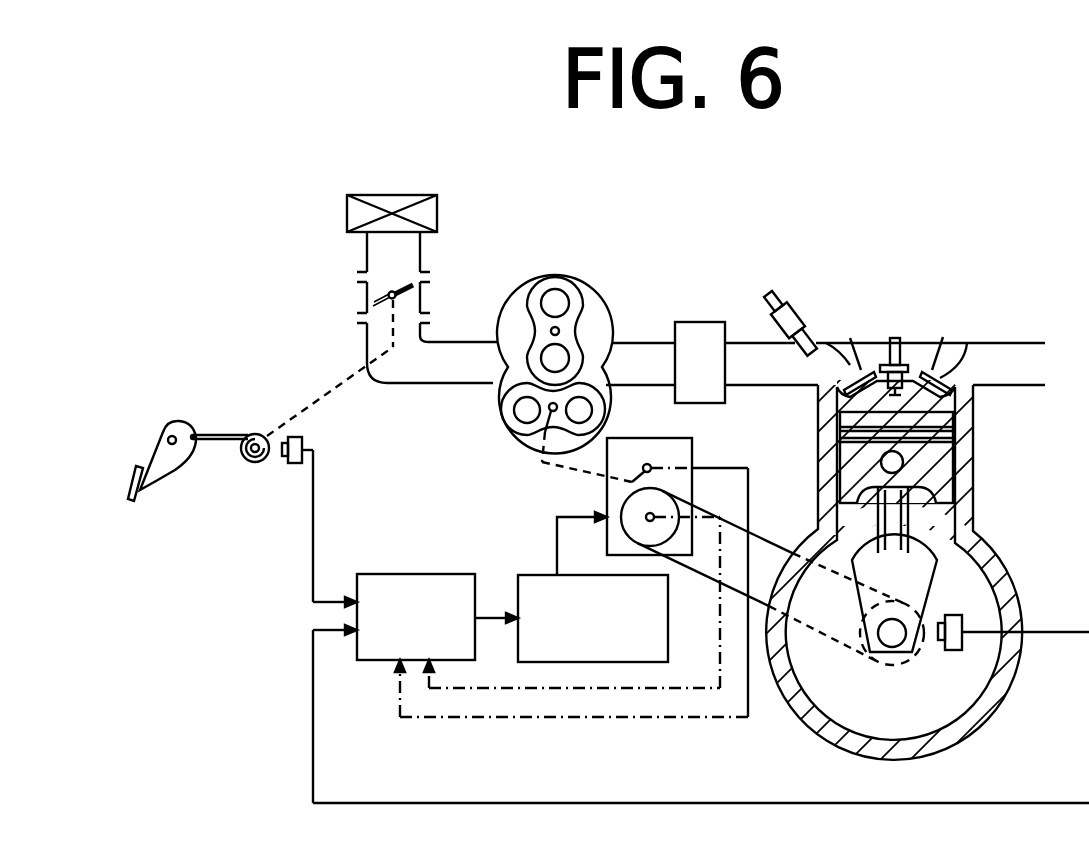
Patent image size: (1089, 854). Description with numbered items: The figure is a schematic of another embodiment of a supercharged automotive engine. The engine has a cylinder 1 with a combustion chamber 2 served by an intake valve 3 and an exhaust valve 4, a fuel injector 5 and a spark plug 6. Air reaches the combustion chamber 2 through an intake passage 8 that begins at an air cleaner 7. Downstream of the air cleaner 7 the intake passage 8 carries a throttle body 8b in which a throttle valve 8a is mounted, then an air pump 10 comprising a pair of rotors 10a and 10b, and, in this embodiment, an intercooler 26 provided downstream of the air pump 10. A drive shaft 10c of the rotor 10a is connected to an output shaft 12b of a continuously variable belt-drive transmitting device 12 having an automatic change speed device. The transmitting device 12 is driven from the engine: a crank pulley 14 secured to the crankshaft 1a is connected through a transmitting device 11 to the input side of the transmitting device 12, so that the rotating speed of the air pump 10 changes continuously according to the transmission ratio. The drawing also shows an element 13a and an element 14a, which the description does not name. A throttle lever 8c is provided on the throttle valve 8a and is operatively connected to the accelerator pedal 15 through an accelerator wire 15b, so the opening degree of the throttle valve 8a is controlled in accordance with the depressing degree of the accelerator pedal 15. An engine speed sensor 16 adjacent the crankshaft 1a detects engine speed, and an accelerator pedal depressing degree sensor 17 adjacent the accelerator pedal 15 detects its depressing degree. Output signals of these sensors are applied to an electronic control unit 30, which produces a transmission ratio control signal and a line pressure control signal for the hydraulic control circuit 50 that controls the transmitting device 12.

The cylinder 1 is at (967, 516).
The crankshaft 1a is at (910, 655).
The combustion chamber 2 is at (947, 405).
The intake valve 3 is at (870, 367).
The exhaust valve 4 is at (943, 373).
The fuel injector 5 is at (796, 322).
The spark plug 6 is at (900, 360).
The air cleaner 7 is at (437, 203).
The intake passage 8 is at (383, 378).
The throttle valve 8a is at (373, 303).
The throttle body 8b is at (422, 292).
The throttle lever 8c is at (260, 463).
The air pump 10 is at (524, 280).
The rotor 10a is at (504, 407).
The rotor 10b is at (582, 313).
The drive shaft 10c is at (568, 446).
The transmitting device 11 is at (780, 553).
The continuously variable belt-drive transmitting device (CVT) 12 is at (693, 475).
The output shaft 12b is at (653, 464).
The hydraulic pressure line 13a is at (605, 505).
The crank pulley 14 is at (898, 662).
The clutch pulley shaft 14a is at (650, 521).
The accelerator pedal 15 is at (133, 468).
The accelerator wire 15b is at (213, 442).
The engine speed sensor 16 is at (967, 604).
The accelerator pedal depressing degree sensor 17 is at (300, 436).
The intercooler 26 is at (694, 322).
The electronic control unit 30 is at (436, 574).
The hydraulic control circuit 50 is at (534, 575).